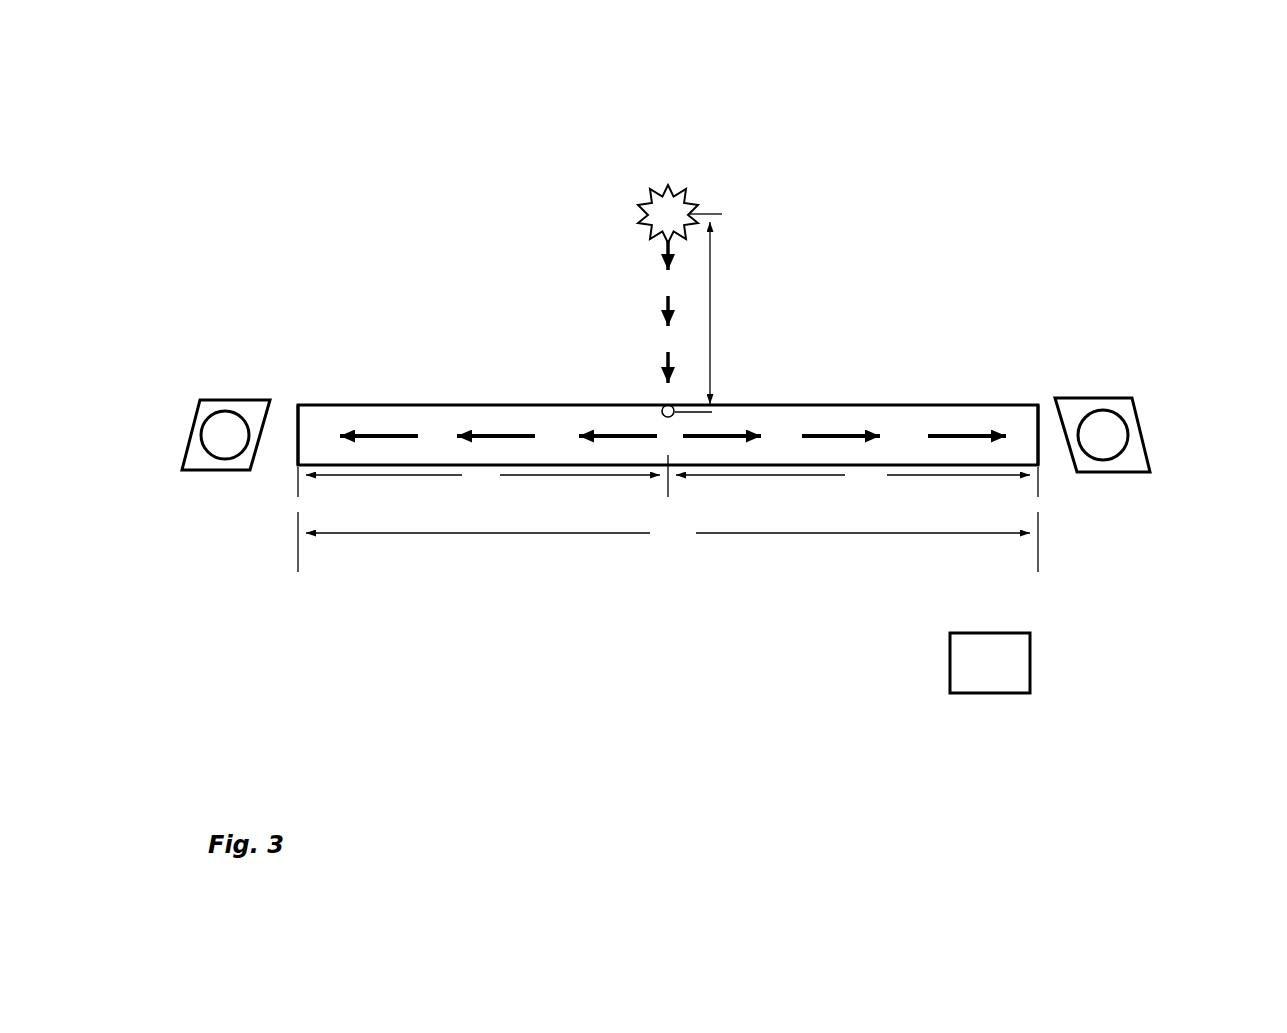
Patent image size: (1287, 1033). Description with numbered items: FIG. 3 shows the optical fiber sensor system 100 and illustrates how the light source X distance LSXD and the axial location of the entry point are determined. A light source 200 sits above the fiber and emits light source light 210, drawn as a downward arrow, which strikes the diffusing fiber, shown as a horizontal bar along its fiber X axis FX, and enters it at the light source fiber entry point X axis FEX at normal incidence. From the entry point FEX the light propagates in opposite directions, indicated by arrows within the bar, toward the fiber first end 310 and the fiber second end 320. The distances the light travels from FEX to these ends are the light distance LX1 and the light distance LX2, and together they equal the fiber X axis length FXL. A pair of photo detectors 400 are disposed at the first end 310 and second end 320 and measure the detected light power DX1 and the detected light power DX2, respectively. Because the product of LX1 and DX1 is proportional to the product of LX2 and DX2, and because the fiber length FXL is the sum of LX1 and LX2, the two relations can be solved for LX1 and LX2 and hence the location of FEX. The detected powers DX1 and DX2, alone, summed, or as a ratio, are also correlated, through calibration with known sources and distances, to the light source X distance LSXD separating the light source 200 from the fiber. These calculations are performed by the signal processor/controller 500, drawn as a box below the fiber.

The optical fiber sensor system 100 is at (316, 118).
The light source 200 is at (640, 190).
The light source light 210 is at (646, 303).
The fiber first end 310 is at (298, 373).
The fiber second end 320 is at (1019, 373).
The photo detector 400 is at (186, 412).
The signal processor/controller 500 is at (1010, 716).
The fiber X axis FX is at (795, 373).
The light source fiber entry point X axis FEX is at (655, 396).
The detected light power X1 DX1 is at (231, 440).
The detected light power X2 DX2 is at (1107, 425).
The light source X distance LSXD is at (717, 313).
The light distance X1 LX1 is at (483, 476).
The light distance X2 LX2 is at (857, 482).
The fiber X axis length FXL is at (668, 542).